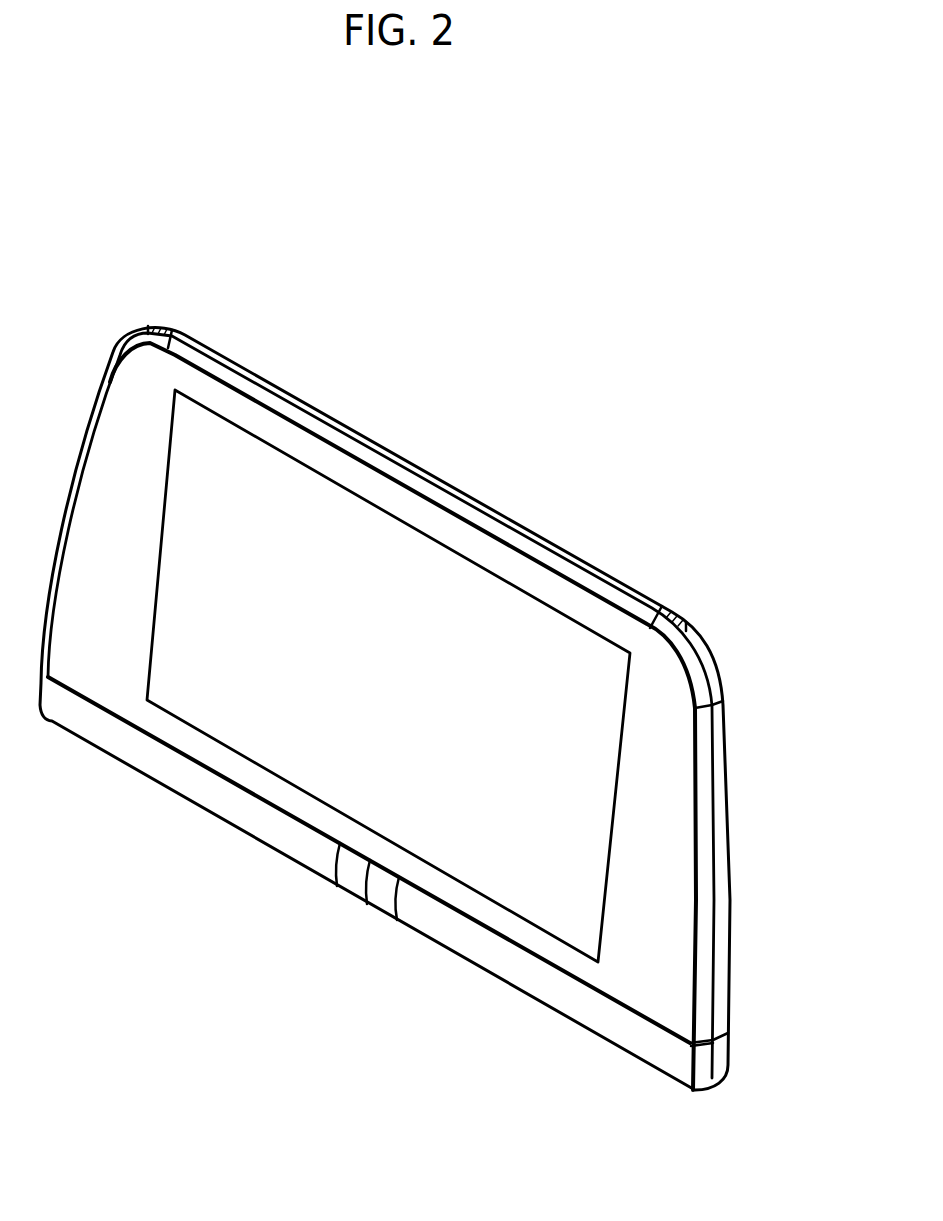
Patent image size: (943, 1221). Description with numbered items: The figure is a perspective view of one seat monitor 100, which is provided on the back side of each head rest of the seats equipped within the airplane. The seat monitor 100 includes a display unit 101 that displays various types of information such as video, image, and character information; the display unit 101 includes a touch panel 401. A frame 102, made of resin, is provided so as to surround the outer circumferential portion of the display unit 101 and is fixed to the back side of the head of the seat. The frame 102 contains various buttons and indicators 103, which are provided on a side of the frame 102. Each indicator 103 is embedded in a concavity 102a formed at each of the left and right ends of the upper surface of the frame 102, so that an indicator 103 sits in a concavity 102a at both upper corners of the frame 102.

The seat monitor 100 is at (452, 440).
The display unit 101 is at (484, 676).
The touch panel 401 is at (562, 830).
The frame 102 is at (377, 451).
The concavity 102a is at (170, 329).
The indicator 103 is at (160, 326).